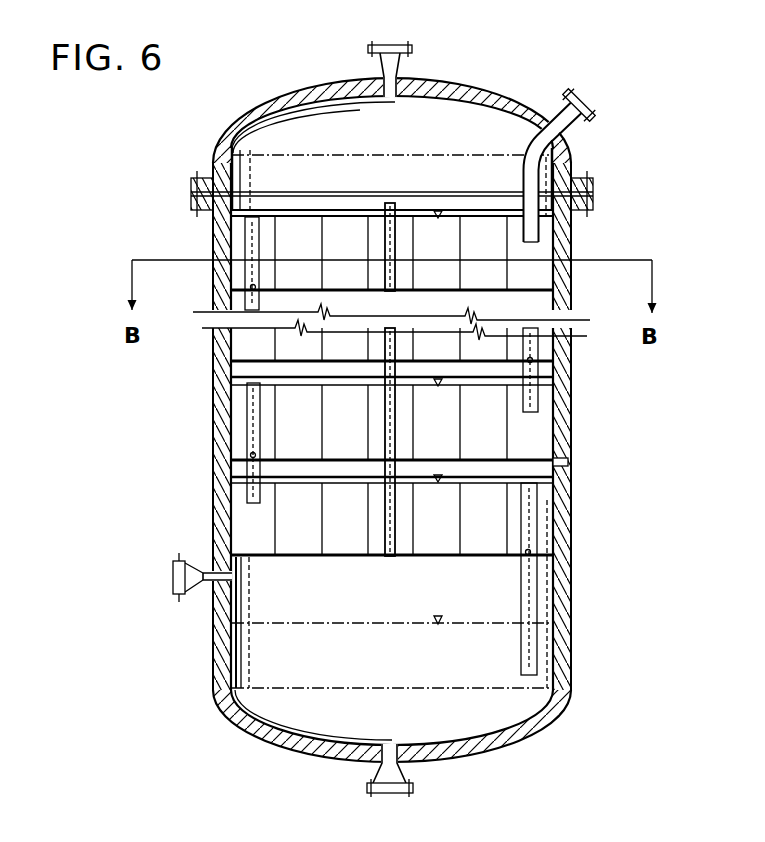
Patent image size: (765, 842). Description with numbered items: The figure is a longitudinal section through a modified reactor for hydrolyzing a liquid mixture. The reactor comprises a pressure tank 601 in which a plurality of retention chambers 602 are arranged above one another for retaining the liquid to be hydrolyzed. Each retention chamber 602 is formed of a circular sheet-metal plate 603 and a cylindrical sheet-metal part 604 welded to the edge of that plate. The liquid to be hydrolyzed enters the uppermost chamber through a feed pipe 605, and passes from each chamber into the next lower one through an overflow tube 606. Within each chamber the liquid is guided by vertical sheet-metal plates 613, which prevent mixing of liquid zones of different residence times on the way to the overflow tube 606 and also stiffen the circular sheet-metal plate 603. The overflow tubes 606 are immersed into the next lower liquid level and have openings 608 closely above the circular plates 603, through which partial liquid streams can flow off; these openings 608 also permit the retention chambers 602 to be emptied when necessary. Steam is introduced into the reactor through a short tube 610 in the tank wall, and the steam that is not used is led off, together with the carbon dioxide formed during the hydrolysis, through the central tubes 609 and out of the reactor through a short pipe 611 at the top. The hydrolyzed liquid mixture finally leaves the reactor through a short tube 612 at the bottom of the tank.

The pressure tank 601 is at (268, 91).
The retention chamber 602 is at (543, 240).
The circular sheet-metal plate 603 is at (540, 293).
The cylindrical sheet-metal part 604 is at (572, 274).
The feed pipe 605 is at (556, 119).
The overflow tube 606 is at (253, 268).
The opening 608 is at (253, 288).
The tube 609 is at (388, 203).
The short tube 610 is at (203, 583).
The short pipe 611 is at (405, 70).
The short tube 612 is at (401, 764).
The vertical sheet-metal plate 613 is at (368, 535).